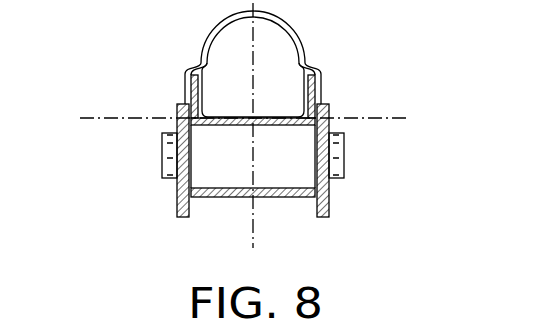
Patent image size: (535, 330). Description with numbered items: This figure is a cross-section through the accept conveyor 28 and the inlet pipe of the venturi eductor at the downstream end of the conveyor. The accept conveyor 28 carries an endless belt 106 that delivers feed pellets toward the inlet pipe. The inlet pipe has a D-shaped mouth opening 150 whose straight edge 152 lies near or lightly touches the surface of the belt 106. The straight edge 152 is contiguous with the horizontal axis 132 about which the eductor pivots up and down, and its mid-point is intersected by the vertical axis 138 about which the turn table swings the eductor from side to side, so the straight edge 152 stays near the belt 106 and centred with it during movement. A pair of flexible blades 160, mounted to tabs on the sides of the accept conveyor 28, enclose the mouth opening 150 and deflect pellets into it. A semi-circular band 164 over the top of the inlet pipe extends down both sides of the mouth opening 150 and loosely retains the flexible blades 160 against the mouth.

The accept conveyor 28 is at (177, 198).
The endless belt 106 is at (304, 82).
The horizontal axis 132 is at (125, 118).
The vertical axis 138 is at (253, 220).
The D-shaped mouth opening 150 is at (228, 22).
The straight edge 152 is at (315, 77).
The flexible blades 160 is at (190, 87).
The semi-circular band 164 is at (203, 39).